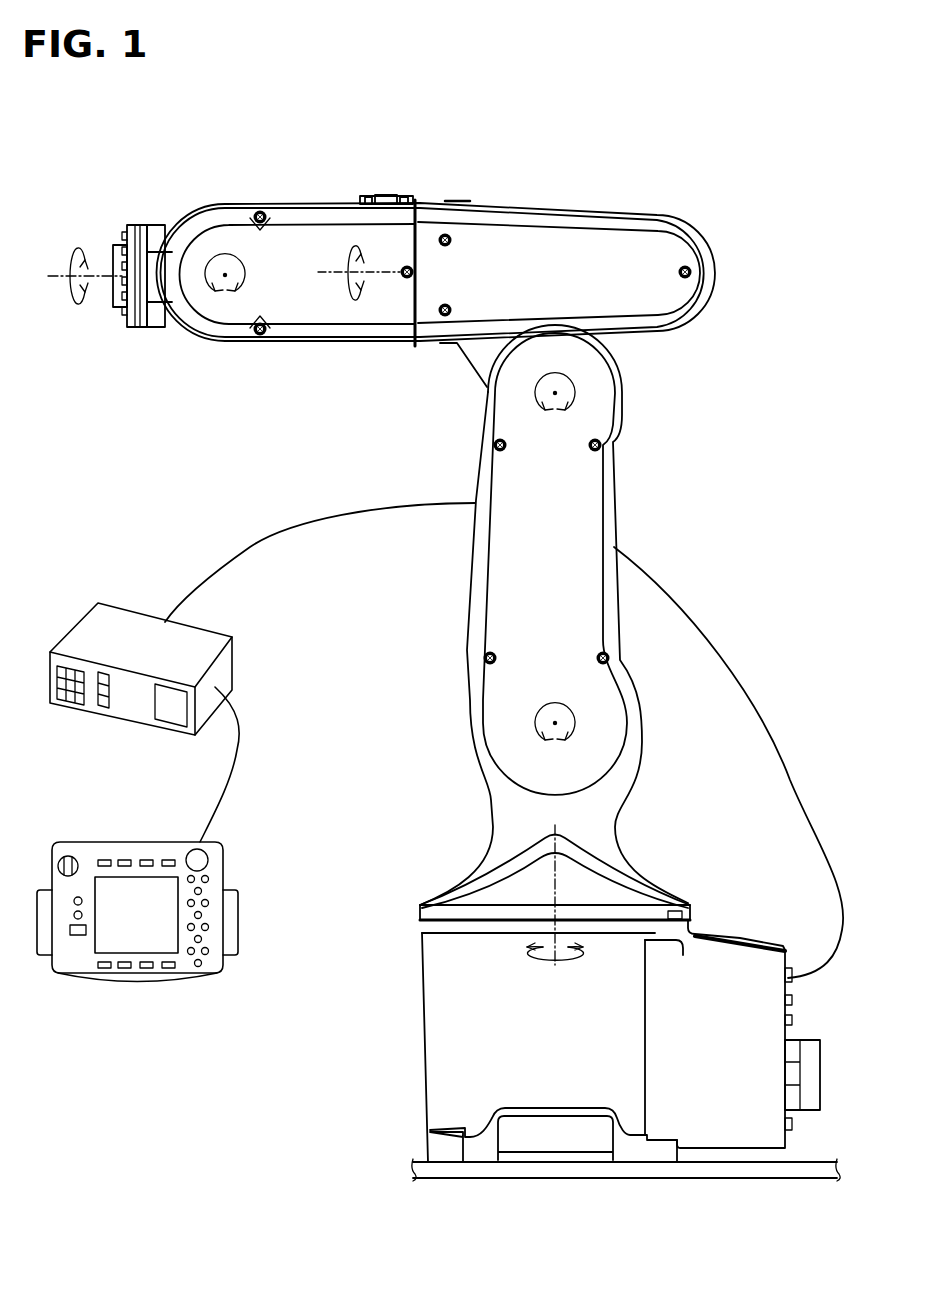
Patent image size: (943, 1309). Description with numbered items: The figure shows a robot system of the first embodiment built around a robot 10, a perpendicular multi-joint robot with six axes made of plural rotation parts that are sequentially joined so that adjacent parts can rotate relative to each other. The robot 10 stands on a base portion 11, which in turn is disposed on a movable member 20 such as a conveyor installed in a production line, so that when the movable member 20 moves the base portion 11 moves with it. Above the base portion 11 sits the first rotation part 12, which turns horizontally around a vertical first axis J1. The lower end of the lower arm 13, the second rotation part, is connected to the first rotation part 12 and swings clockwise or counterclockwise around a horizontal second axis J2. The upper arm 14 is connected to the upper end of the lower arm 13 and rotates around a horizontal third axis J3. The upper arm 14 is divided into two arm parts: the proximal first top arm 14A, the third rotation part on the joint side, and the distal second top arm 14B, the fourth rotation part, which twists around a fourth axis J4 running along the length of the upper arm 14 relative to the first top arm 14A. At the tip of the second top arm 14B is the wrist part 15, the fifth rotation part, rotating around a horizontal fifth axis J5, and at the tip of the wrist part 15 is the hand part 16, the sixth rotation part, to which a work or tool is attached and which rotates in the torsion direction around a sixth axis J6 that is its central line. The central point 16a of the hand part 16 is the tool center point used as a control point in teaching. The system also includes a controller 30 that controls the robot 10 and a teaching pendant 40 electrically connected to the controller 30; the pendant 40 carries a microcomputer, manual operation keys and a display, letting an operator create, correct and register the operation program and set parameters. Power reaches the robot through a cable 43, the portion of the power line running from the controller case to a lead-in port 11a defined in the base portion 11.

The robot 10 is at (737, 167).
The base portion 11 is at (430, 1082).
The lead-in port 11a is at (794, 984).
The first rotation part 12 is at (474, 858).
The lower arm 13 is at (472, 550).
The upper arm 14 is at (440, 150).
The first top arm 14A is at (430, 205).
The second top arm 14B is at (346, 205).
The wrist part 15 is at (163, 226).
The hand part 16 is at (138, 226).
The central point 16a is at (110, 285).
The movable member 20 is at (778, 1178).
The controller 30 is at (224, 634).
The teaching pendant 40 is at (88, 850).
The cable 43 is at (774, 748).
The first axis J1 is at (555, 972).
The second axis J2 is at (572, 721).
The third axis J3 is at (555, 409).
The fourth axis J4 is at (420, 272).
The fifth axis J5 is at (225, 287).
The sixth axis J6 is at (66, 276).